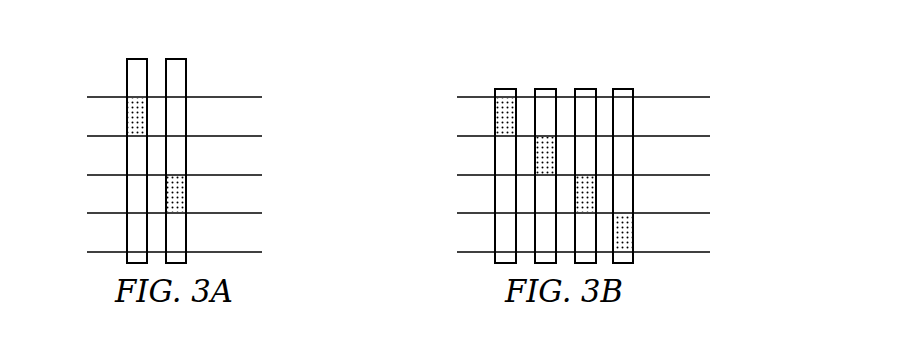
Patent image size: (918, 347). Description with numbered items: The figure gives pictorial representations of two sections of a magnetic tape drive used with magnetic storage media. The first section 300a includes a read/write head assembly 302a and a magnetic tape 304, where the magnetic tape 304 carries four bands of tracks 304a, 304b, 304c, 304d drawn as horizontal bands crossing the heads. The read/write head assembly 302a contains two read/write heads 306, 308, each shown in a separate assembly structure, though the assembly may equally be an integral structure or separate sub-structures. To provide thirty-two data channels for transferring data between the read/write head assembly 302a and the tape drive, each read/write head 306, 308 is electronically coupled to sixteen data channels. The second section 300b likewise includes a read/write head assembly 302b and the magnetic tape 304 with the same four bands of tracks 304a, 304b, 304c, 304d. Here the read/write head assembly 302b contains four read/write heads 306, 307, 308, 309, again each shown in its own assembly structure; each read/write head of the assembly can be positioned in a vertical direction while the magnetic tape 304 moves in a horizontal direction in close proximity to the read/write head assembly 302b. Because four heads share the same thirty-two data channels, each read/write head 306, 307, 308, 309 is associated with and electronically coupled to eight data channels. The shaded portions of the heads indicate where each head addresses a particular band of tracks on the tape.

In FIG. 3A, the section of a magnetic tape drive 300a is at (90, 56).
In FIG. 3B, the section of a magnetic tape drive 300b is at (647, 56).
In FIG. 3A, the read/write head assembly 302a is at (190, 53).
In FIG. 3B, the read/write head assembly 302b is at (637, 81).
In FIG. 3A, the magnetic tape 304 is at (228, 96).
In FIG. 3B, the magnetic tape 304 is at (676, 96).
In FIG. 3A, the band of tracks 304a is at (266, 116).
In FIG. 3B, the band of tracks 304a is at (715, 116).
In FIG. 3A, the band of tracks 304b is at (266, 154).
In FIG. 3B, the band of tracks 304b is at (715, 154).
In FIG. 3A, the band of tracks 304c is at (266, 196).
In FIG. 3B, the band of tracks 304c is at (715, 196).
In FIG. 3A, the band of tracks 304d is at (266, 235).
In FIG. 3B, the band of tracks 304d is at (715, 236).
In FIG. 3A, the read/write head 306 is at (128, 120).
In FIG. 3B, the read/write head 306 is at (497, 120).
In FIG. 3B, the read/write head 307 is at (540, 149).
In FIG. 3A, the read/write head 308 is at (186, 192).
In FIG. 3B, the read/write head 308 is at (592, 185).
In FIG. 3B, the read/write head 309 is at (627, 228).